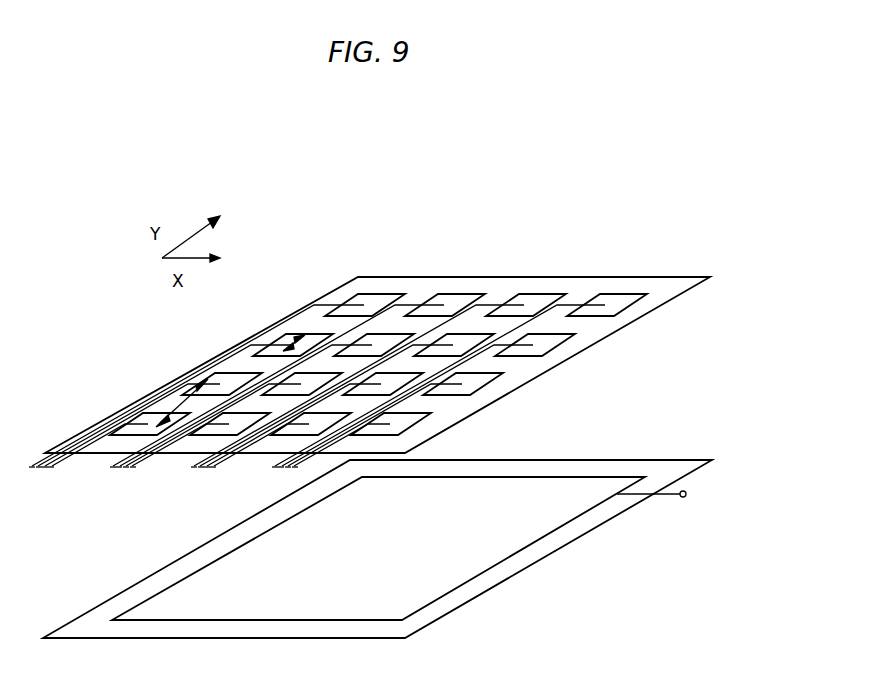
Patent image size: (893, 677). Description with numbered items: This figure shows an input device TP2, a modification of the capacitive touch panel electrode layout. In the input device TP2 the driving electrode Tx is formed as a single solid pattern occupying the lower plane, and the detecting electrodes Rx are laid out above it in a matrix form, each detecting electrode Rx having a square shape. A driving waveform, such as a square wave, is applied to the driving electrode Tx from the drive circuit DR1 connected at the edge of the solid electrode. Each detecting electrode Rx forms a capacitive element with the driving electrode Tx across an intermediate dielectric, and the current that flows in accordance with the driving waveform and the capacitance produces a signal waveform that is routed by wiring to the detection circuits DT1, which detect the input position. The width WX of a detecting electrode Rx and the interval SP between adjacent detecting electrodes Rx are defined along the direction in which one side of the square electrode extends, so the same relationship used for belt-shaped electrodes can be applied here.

The input device TP2 is at (682, 240).
The detecting electrode Rx is at (366, 300).
The detection circuit DT1 is at (311, 401).
The width WX is at (283, 345).
The interval SP is at (195, 396).
The driving electrode Tx is at (392, 591).
The drive circuit DR1 is at (674, 494).